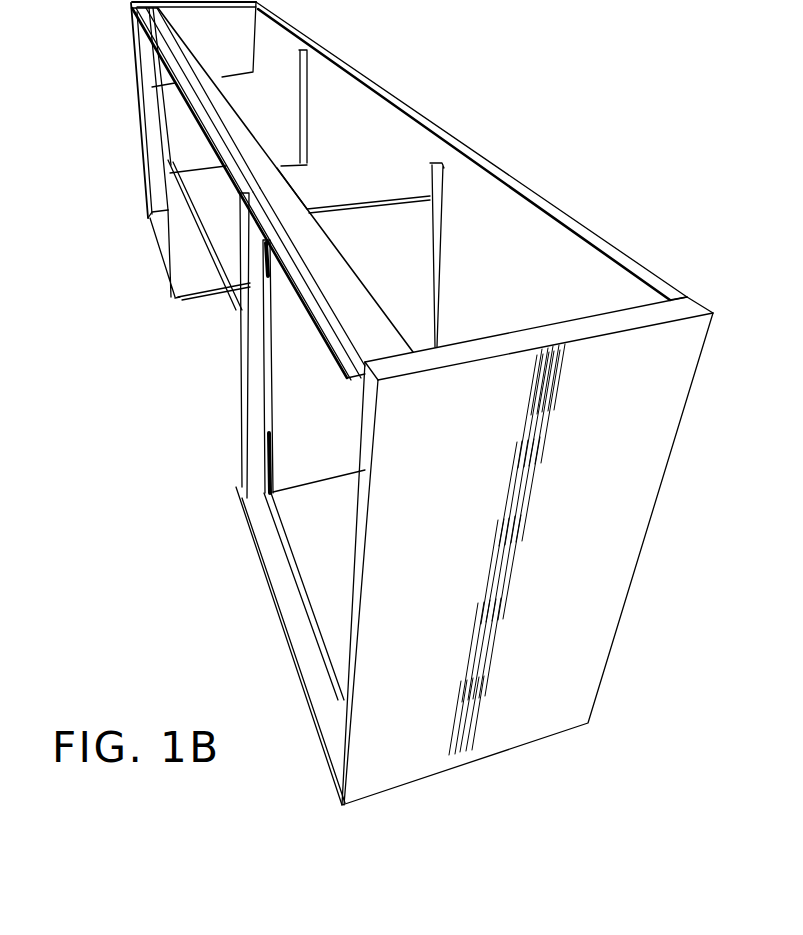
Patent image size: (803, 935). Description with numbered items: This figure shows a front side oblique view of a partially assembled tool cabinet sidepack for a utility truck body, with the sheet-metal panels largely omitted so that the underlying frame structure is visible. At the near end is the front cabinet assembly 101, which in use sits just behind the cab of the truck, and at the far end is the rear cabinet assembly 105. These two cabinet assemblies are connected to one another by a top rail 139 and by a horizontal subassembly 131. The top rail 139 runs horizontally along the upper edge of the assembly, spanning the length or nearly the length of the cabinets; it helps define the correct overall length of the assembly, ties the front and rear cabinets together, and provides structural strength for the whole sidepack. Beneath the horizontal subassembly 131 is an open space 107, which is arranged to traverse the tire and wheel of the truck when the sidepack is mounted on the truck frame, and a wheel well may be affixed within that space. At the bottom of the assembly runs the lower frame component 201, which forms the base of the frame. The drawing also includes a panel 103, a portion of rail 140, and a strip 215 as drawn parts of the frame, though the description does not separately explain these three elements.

The front cabinet assembly 101 is at (500, 303).
The partition panel 103 is at (381, 168).
The rear cabinet assembly 105 is at (241, 53).
The space 107 is at (223, 323).
The horizontal subassembly 131 is at (202, 228).
The top rail 139 is at (168, 50).
The rail front section 140 is at (340, 352).
The lower frame component 201 is at (297, 605).
The strip 215 is at (347, 273).